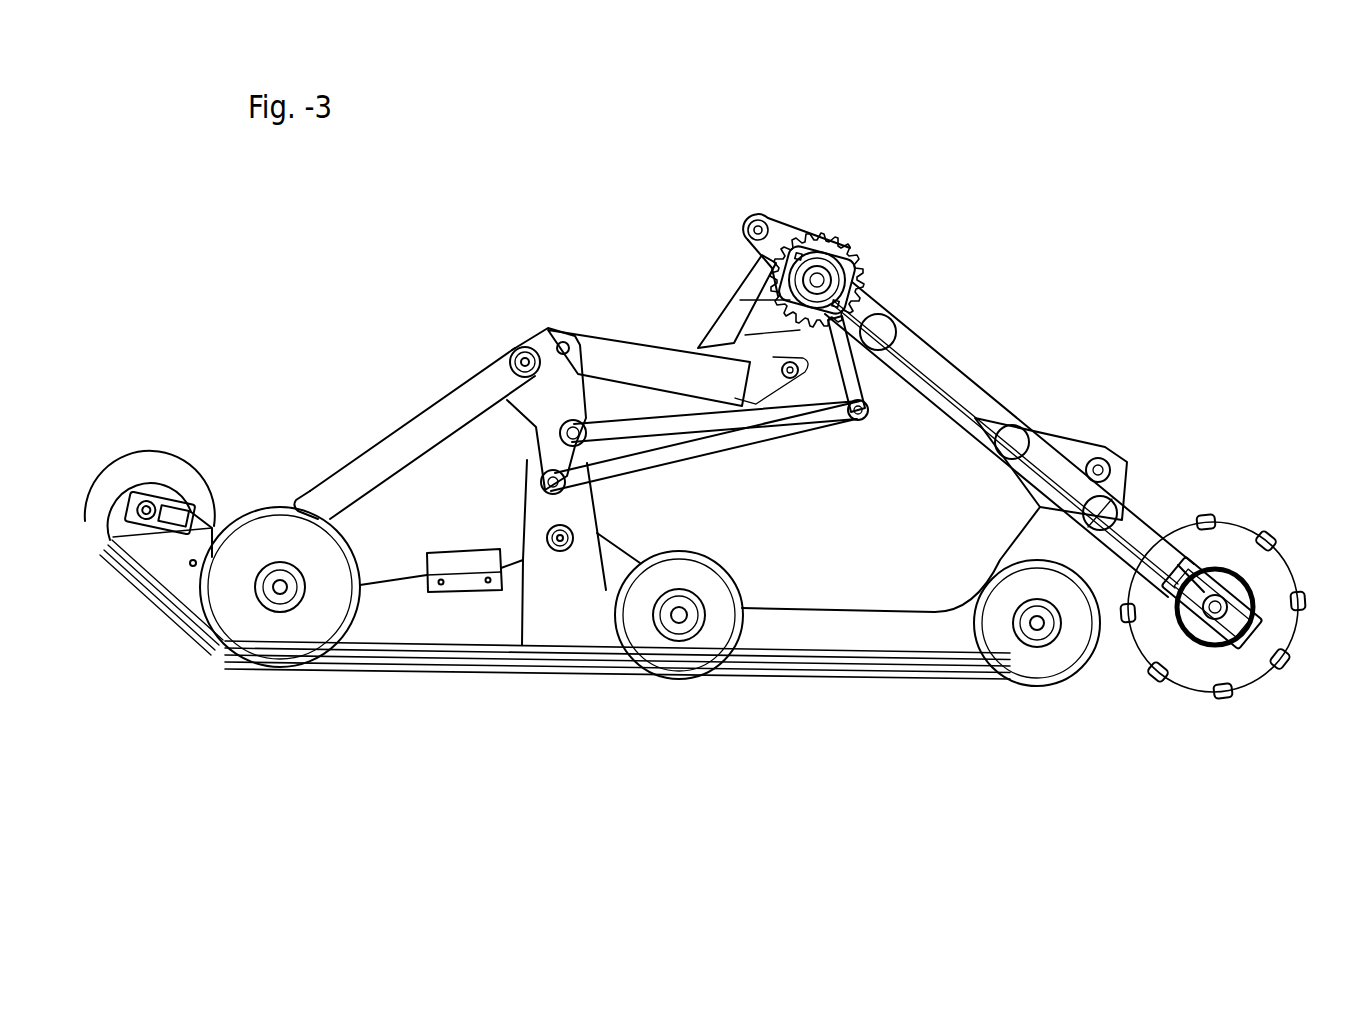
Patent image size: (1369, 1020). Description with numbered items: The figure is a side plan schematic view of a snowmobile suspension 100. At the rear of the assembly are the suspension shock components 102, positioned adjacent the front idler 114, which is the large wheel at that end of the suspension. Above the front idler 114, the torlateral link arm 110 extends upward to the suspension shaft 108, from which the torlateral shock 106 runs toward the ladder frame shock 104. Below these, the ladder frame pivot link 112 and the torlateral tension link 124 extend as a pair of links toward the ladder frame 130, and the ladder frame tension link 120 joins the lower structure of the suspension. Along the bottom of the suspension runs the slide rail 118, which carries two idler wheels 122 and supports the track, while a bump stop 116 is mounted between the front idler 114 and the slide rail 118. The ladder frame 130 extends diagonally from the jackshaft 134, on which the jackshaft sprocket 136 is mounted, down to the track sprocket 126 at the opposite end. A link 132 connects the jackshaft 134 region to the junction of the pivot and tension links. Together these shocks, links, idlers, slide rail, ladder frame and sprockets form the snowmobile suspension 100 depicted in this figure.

The snowmobile suspension 100 is at (540, 185).
The suspension shock components 102 is at (160, 395).
The ladder frame shock 104 is at (725, 318).
The torlateral shock 106 is at (627, 362).
The suspension shaft 108 is at (507, 352).
The torlateral link arm 110 is at (420, 440).
The ladder frame pivot link 112 is at (538, 492).
The front idler 114 is at (258, 630).
The bump stop 116 is at (455, 585).
The slide rail 118 is at (578, 620).
The ladder frame tension link 120 is at (604, 575).
The idler wheel 122 is at (720, 632).
The torlateral tension link 124 is at (800, 408).
The track sprocket 126 is at (1250, 660).
The ladder frame 130 is at (985, 420).
The crank link 132 is at (864, 378).
The jackshaft 134 is at (832, 279).
The jackshaft sprocket 136 is at (847, 243).